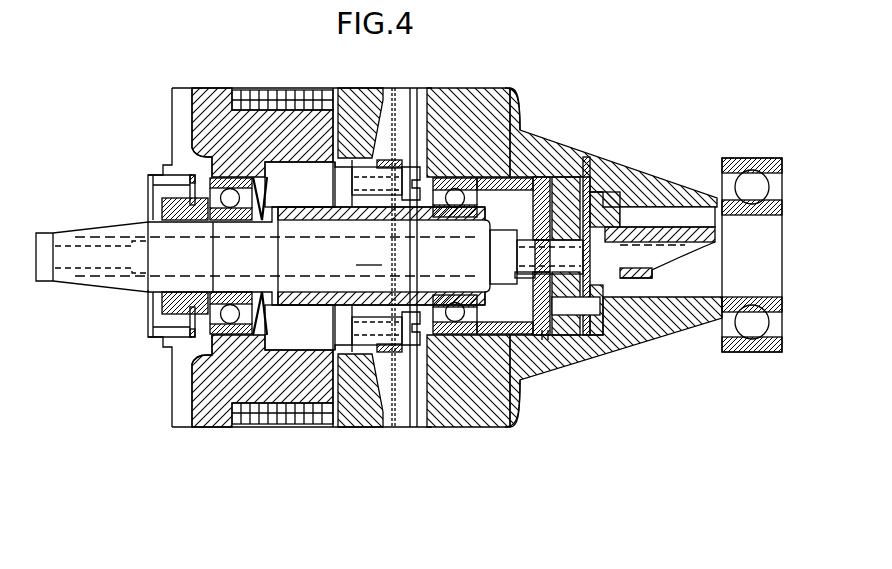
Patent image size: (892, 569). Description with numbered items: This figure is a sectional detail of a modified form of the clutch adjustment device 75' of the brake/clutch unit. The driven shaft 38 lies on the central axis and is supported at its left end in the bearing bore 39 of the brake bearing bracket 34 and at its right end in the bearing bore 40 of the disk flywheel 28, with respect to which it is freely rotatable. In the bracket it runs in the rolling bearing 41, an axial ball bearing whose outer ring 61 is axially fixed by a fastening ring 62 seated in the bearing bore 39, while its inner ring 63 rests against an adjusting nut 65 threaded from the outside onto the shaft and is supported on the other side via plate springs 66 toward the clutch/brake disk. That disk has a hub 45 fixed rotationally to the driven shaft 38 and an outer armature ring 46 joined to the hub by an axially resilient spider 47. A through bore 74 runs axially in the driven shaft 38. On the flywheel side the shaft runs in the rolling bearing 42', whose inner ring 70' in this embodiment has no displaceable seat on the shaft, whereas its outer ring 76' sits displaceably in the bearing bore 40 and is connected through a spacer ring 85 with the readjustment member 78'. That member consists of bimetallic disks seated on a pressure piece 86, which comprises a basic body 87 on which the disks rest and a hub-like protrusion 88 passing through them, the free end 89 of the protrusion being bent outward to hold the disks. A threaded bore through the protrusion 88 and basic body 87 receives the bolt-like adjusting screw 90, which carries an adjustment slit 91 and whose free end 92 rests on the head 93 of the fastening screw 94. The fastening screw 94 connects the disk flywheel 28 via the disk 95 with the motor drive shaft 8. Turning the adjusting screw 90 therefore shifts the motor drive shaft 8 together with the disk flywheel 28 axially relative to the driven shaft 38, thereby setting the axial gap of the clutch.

The motor drive shaft 8 is at (763, 271).
The disk flywheel 28 is at (532, 157).
The brake bearing bracket 34 is at (208, 123).
The driven shaft 38 is at (80, 228).
The bearing bore 39 is at (160, 328).
The bearing bore 40 is at (517, 430).
The rolling bearing 41 is at (235, 177).
The rolling bearing 42' is at (460, 284).
The hub 45 is at (301, 207).
The outer armature ring 46 is at (358, 430).
The axially resilient spider 47 is at (400, 430).
The outer ring 61 is at (200, 150).
The fastening ring 62 is at (185, 184).
The inner ring 63 is at (229, 222).
The adjusting nut 65 is at (170, 302).
The plate springs 66 is at (272, 307).
The inner ring 70' is at (455, 256).
The through bore 74 is at (83, 260).
The clutch adjustment device 75' is at (296, 256).
The outer ring 76' is at (457, 184).
The readjustment member 78' is at (558, 380).
The spacer ring 85 is at (500, 177).
The pressure piece 86 is at (570, 336).
The basic body 87 is at (562, 192).
The hub-like protrusion 88 is at (537, 275).
The free end 89 is at (527, 275).
The adjusting screw 90 is at (588, 193).
The adjustment slit 91 is at (517, 242).
The free end 92 is at (597, 200).
The head 93 is at (607, 200).
The fastening screw 94 is at (635, 258).
The disk 95 is at (595, 287).